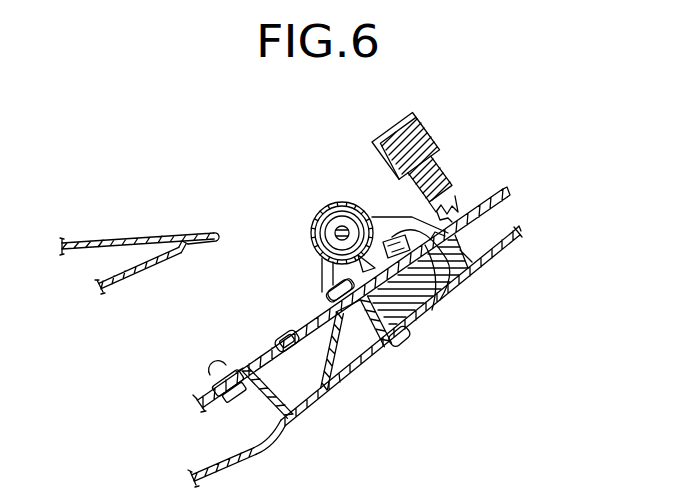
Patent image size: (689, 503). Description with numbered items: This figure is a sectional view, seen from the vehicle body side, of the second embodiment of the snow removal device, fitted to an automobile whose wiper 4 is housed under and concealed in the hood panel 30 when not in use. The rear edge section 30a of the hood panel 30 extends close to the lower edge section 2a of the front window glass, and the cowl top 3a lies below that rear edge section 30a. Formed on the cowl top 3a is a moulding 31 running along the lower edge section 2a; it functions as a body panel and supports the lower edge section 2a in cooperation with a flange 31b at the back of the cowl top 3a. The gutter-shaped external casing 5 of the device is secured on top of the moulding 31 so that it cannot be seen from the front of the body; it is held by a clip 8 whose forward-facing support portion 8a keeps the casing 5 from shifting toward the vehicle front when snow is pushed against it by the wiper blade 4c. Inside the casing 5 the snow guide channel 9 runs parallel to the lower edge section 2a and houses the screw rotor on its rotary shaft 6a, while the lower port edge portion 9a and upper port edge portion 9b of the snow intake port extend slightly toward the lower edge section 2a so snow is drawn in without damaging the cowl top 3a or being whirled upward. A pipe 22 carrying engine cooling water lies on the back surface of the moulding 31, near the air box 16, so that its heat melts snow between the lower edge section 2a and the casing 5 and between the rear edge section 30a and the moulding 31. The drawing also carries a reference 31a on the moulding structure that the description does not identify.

The lower edge section 2a is at (507, 201).
The cowl top 3a is at (253, 360).
The wiper 4 is at (415, 112).
The wiper blade 4c is at (440, 165).
The external casing 5 is at (312, 222).
The rotary shaft 6a is at (343, 228).
The clip 8 is at (343, 203).
The support portion 8a is at (311, 266).
The snow guide channel 9 is at (488, 252).
The lower port edge portion 9a is at (423, 309).
The upper port edge portion 9b is at (333, 203).
The air box 16 is at (220, 453).
The pipe 22 is at (287, 349).
The hood panel 30 is at (120, 237).
The rear edge section 30a is at (207, 227).
The moulding 31 is at (325, 320).
The bracket web 31a is at (326, 370).
The flange 31b is at (420, 333).